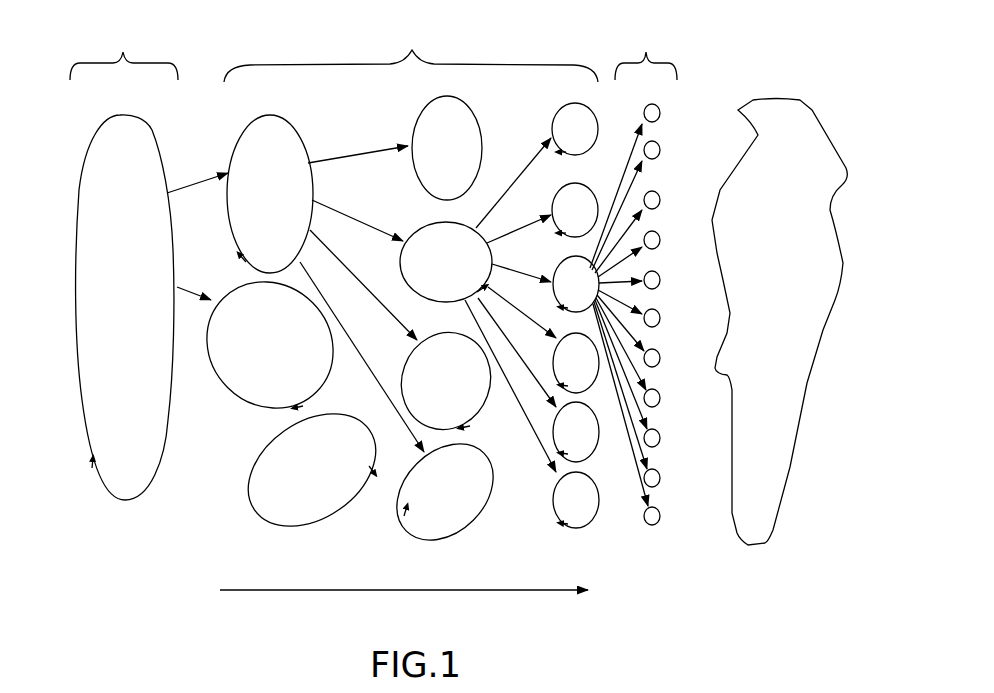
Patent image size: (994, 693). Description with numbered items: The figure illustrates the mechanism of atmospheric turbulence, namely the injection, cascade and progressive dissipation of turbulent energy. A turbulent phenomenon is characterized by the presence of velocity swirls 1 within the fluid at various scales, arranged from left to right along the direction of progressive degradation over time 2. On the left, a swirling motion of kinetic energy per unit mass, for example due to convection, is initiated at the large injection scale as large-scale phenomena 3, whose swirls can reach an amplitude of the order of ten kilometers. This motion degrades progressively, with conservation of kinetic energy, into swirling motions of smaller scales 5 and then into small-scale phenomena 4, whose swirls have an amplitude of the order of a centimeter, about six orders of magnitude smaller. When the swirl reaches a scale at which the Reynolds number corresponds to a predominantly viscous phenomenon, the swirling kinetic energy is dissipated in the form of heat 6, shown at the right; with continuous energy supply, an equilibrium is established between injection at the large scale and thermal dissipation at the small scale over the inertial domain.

The velocity swirls 1 is at (148, 485).
The progressive degradation over time 2 is at (417, 592).
The large-scale phenomena 3 is at (122, 45).
The small-scale phenomena 4 is at (646, 42).
The swirling motions of smaller scales 5 is at (412, 46).
The heat 6 is at (790, 120).